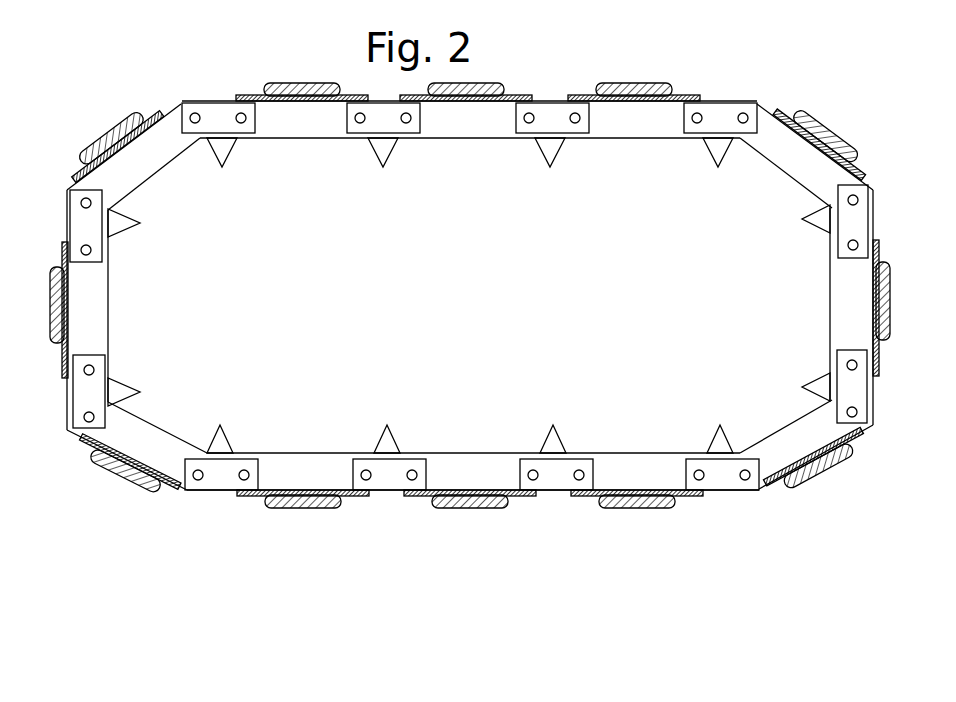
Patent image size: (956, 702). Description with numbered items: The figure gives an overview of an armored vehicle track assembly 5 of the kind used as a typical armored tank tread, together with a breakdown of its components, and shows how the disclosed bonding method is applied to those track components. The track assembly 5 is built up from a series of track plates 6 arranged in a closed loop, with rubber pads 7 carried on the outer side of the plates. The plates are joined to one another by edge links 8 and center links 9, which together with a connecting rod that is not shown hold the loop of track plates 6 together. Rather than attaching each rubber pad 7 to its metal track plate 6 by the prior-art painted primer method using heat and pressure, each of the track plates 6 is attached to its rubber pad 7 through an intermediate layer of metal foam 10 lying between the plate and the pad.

The armored vehicle track assembly 5 is at (290, 118).
The track plate 6 is at (647, 470).
The rubber pad 7 is at (613, 510).
The edge link 8 is at (552, 445).
The center link 9 is at (543, 483).
The intermediate layer of metal foam 10 is at (667, 507).